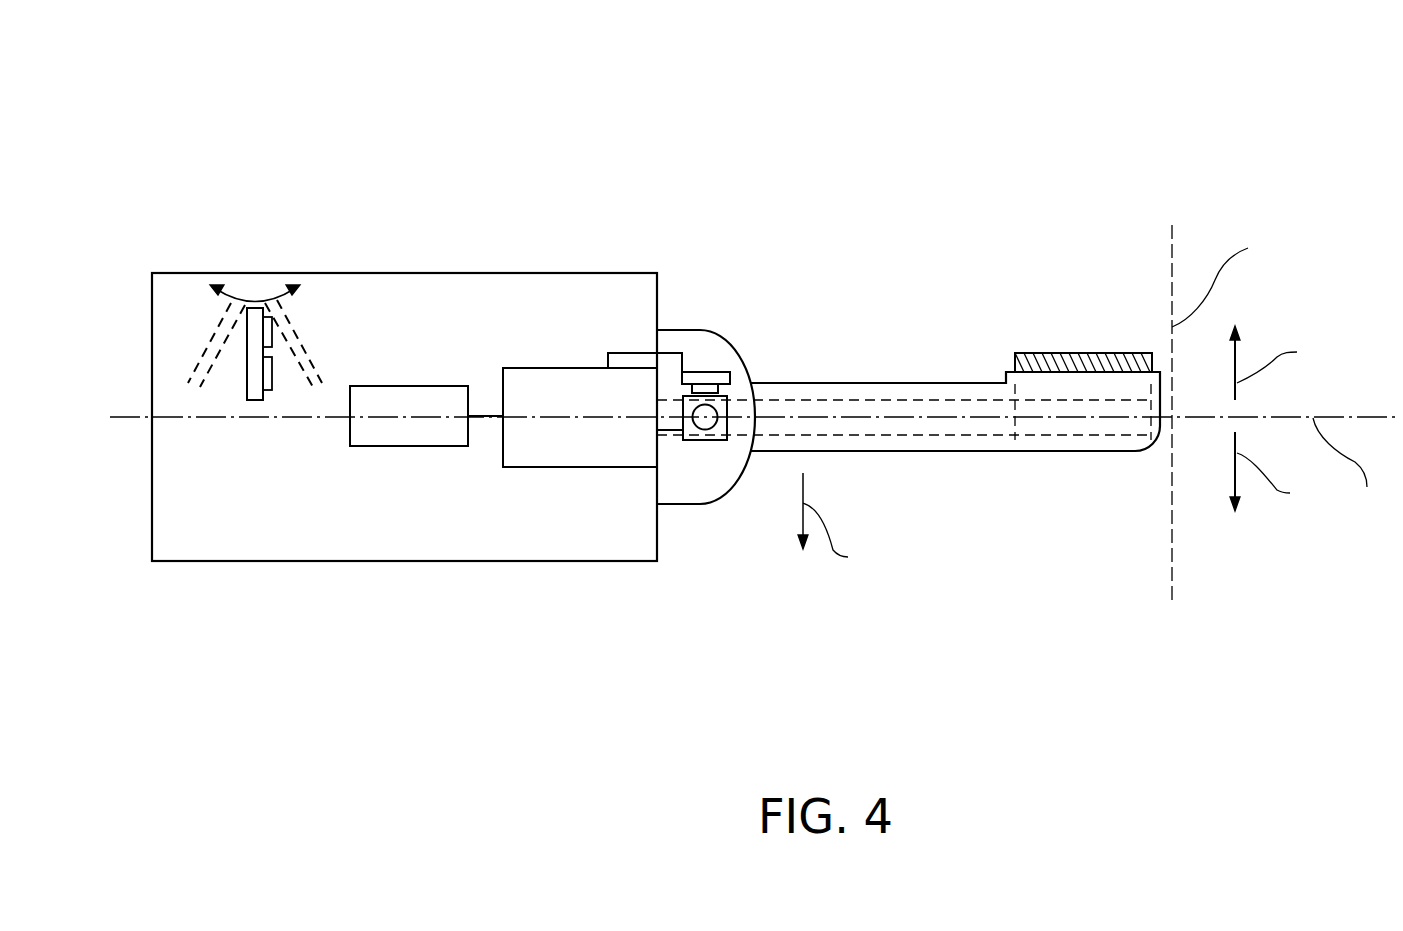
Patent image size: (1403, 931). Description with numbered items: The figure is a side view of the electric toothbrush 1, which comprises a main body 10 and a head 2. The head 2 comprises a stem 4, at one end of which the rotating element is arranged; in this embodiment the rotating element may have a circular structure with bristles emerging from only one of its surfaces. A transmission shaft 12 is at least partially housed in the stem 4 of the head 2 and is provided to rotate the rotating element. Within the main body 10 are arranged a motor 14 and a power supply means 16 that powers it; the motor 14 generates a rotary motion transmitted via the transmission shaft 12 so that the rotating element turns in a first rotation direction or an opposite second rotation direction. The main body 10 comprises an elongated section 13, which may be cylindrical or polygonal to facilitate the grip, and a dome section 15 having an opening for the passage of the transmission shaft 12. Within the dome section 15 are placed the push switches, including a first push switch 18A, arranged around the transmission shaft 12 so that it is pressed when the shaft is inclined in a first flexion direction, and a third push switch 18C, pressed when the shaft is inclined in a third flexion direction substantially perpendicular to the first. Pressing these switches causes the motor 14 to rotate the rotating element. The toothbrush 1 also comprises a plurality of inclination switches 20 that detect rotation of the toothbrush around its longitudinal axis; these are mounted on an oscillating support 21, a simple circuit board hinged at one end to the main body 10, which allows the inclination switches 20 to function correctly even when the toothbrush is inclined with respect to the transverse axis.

The electric toothbrush 1 is at (1073, 192).
The head 2 is at (740, 472).
The stem 4 is at (877, 383).
The main body 10 is at (246, 540).
The transmission shaft 12 is at (982, 380).
The elongated section 13 is at (463, 540).
The motor 14 is at (563, 368).
The dome section 15 is at (677, 497).
The power supply means 16 is at (429, 386).
The first push switch 18A is at (717, 441).
The third push switch 18C is at (703, 378).
The inclination switches 20 is at (273, 373).
The oscillating support 21 is at (257, 401).